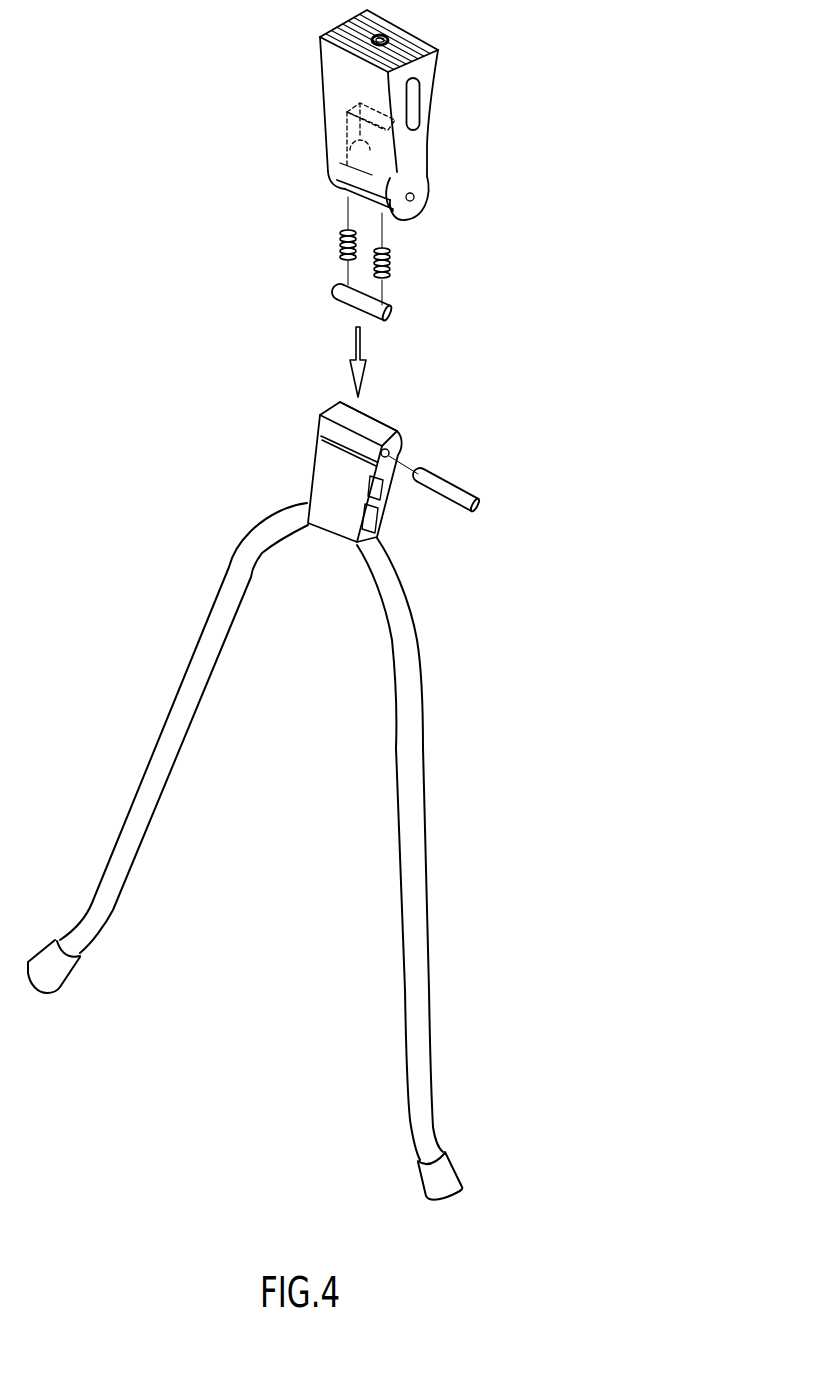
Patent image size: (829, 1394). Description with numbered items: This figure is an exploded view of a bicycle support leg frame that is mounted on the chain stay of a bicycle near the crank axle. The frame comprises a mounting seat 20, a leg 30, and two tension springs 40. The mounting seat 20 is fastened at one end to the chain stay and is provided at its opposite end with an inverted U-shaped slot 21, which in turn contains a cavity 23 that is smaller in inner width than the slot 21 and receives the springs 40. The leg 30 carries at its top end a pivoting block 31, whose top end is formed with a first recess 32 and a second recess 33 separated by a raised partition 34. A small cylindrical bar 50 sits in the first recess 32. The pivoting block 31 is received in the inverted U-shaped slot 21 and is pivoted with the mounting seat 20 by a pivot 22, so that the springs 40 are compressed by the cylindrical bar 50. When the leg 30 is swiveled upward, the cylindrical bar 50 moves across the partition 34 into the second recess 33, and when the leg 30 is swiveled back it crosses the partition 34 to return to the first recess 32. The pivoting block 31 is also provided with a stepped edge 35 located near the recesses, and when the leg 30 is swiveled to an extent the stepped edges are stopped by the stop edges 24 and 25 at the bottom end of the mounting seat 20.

The mounting seat 20 is at (437, 48).
The inverted U-shaped slot 21 is at (340, 163).
The pivot 22 is at (455, 485).
The cavity 23 is at (408, 148).
The stop edge 24 is at (363, 193).
The stop edge 25 is at (397, 173).
The leg 30 is at (423, 707).
The pivoting block 31 is at (320, 482).
The first recess 32 is at (332, 407).
The second recess 33 is at (398, 440).
The partition 34 is at (377, 422).
The stepped edge 35 is at (330, 448).
The tension springs 40 is at (392, 265).
The cylindrical bar 50 is at (397, 315).